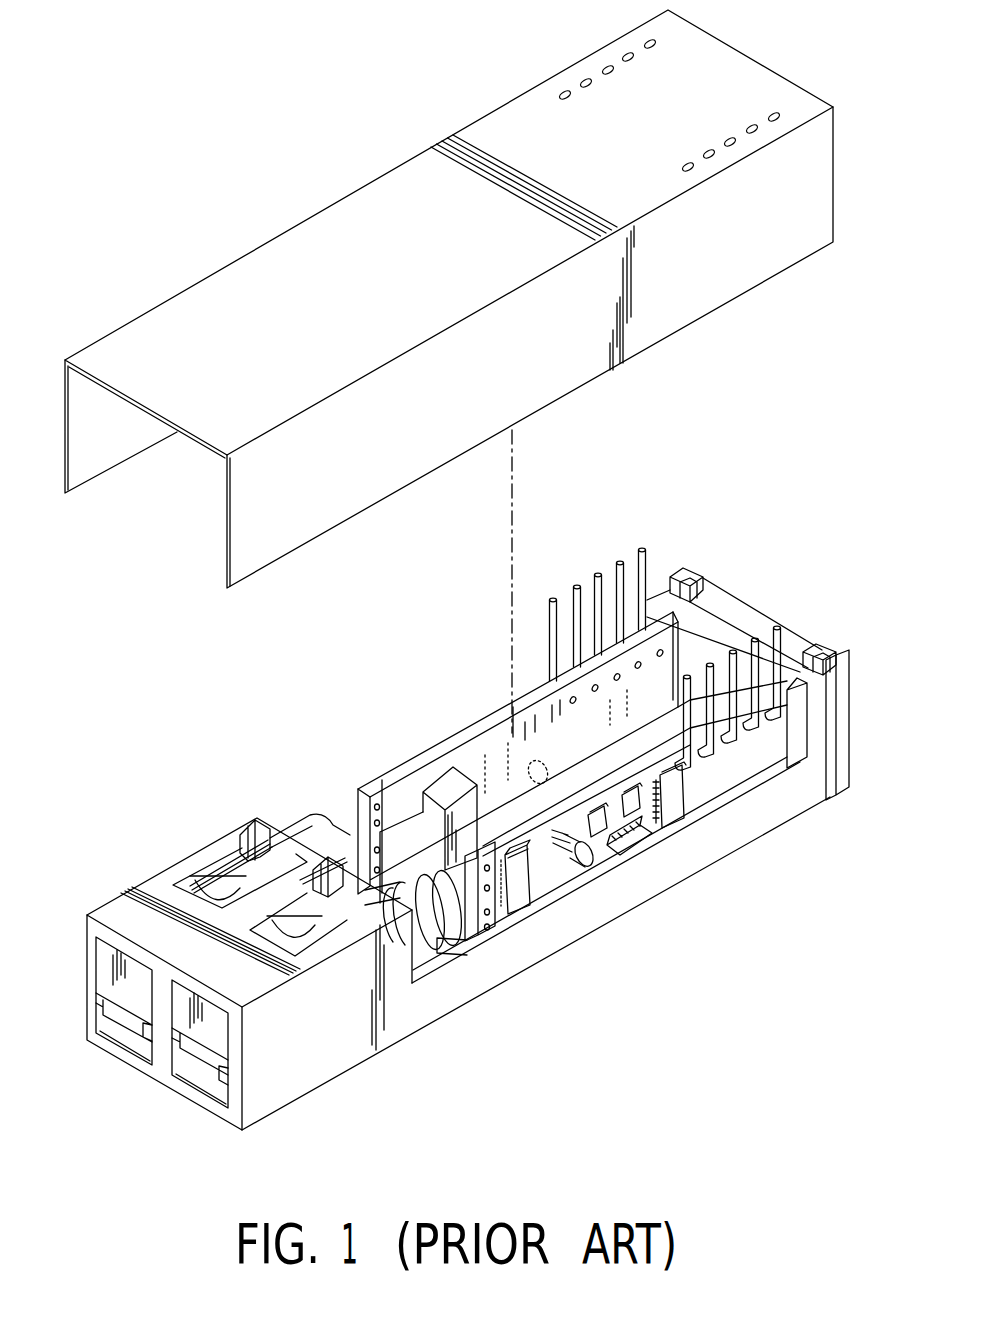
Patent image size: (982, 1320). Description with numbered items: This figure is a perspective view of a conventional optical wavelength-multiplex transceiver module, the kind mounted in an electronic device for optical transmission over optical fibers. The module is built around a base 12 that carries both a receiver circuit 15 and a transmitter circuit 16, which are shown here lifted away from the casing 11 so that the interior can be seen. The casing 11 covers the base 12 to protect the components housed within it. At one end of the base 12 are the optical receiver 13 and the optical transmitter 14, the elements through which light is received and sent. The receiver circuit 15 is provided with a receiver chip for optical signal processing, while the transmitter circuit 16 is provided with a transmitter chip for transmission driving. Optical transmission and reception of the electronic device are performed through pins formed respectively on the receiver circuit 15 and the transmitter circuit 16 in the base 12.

The casing 11 is at (248, 288).
The base 12 is at (488, 973).
The optical receiver 13 is at (255, 872).
The optical transmitter 14 is at (322, 917).
The receiver circuit 15 is at (452, 750).
The transmitter circuit 16 is at (717, 788).